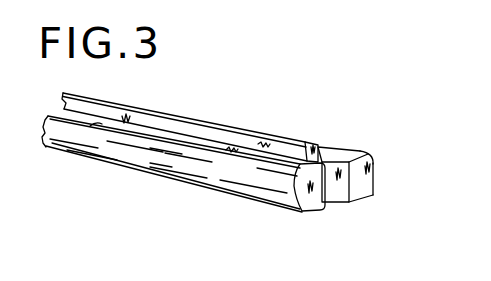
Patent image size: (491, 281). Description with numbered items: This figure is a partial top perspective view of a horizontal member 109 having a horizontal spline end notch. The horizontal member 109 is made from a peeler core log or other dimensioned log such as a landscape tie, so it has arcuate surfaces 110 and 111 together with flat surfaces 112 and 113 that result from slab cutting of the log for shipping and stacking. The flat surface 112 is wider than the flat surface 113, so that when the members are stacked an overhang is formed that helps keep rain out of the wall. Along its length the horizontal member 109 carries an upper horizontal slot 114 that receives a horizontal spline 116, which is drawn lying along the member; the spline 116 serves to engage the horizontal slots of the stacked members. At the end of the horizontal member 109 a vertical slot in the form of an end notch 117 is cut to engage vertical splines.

The horizontal member 109 is at (185, 168).
The arcuate surface 110 is at (285, 208).
The horizontal spline 116 is at (193, 118).
The upper horizontal slot 114 is at (282, 155).
The flat surface 112 is at (340, 148).
The end notch 117 is at (366, 168).
The arcuate surface 111 is at (374, 173).
The flat surface 113 is at (362, 203).